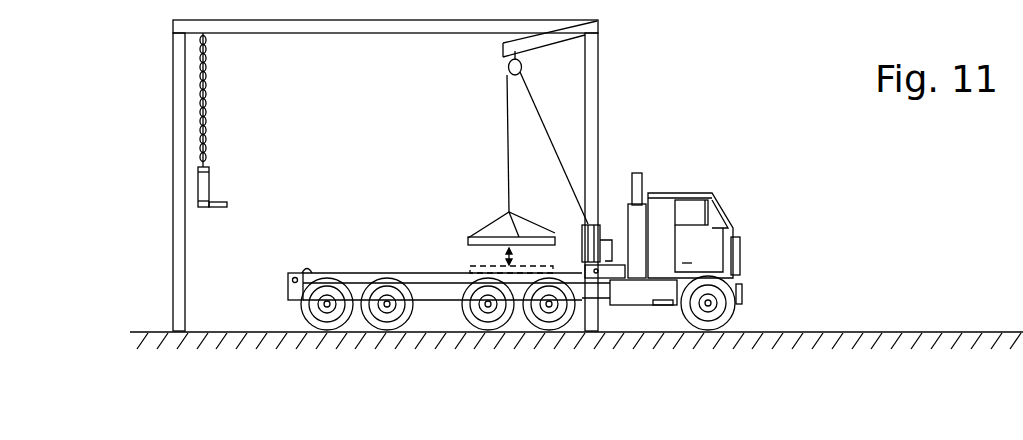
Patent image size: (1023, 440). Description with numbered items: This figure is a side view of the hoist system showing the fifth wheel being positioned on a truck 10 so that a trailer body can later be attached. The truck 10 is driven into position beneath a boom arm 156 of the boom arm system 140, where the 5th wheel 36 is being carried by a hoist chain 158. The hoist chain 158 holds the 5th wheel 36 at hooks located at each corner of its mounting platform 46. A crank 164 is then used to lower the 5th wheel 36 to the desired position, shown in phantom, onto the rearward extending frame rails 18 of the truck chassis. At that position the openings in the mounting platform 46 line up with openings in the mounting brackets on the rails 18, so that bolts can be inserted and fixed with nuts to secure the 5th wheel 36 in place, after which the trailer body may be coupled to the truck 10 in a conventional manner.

The truck 10 is at (550, 261).
The frame rails 18 is at (435, 278).
The 5th wheel 36 is at (468, 240).
The mounting platform 46 is at (561, 243).
The boom arm system 140 is at (478, 171).
The boom arm 156 is at (557, 43).
The hoist chain 158 is at (507, 84).
The crank 164 is at (608, 252).